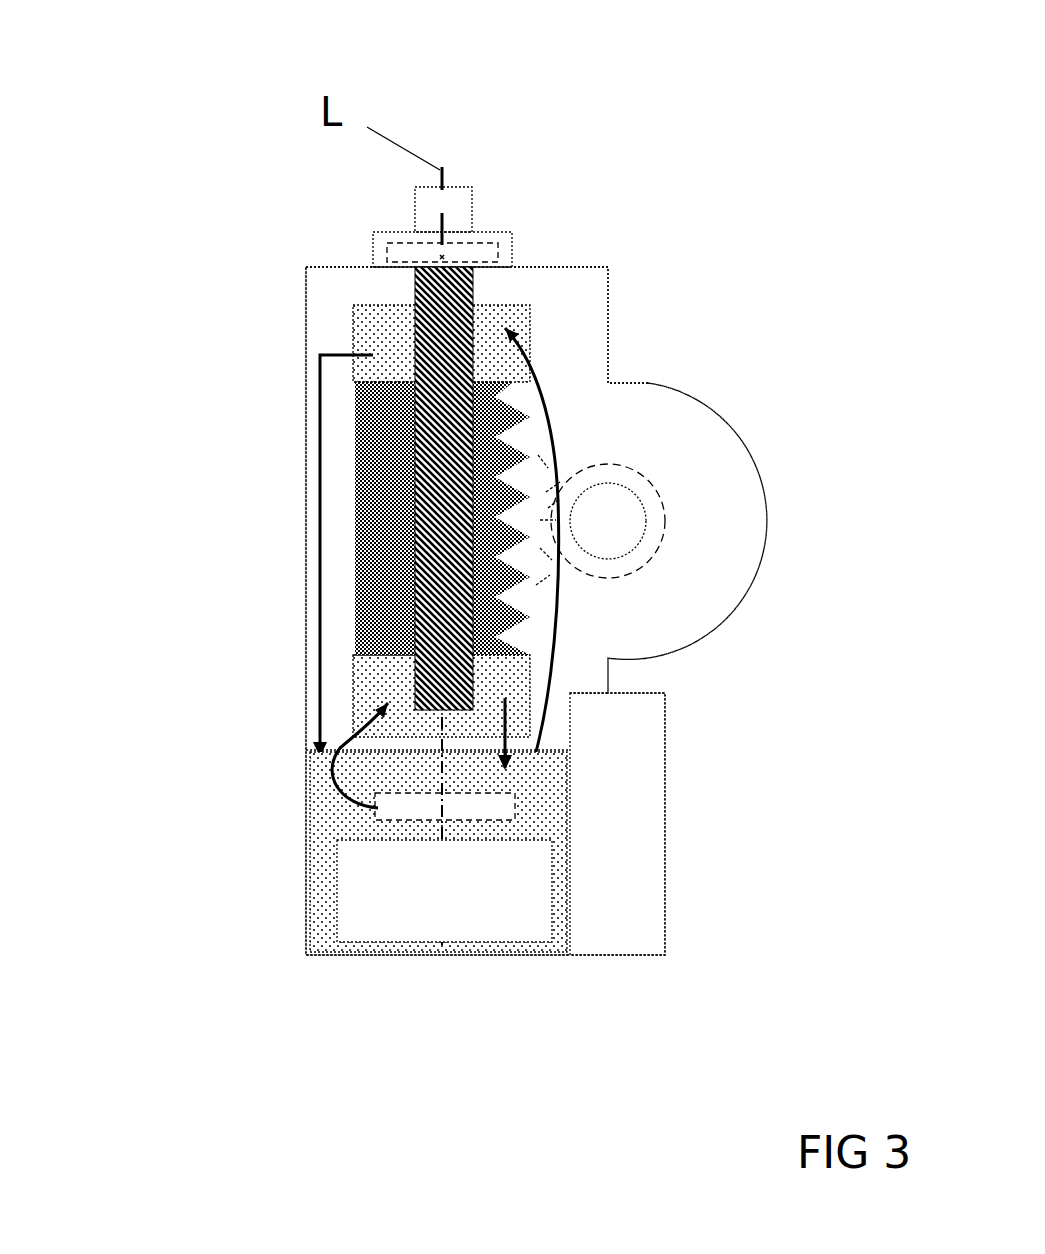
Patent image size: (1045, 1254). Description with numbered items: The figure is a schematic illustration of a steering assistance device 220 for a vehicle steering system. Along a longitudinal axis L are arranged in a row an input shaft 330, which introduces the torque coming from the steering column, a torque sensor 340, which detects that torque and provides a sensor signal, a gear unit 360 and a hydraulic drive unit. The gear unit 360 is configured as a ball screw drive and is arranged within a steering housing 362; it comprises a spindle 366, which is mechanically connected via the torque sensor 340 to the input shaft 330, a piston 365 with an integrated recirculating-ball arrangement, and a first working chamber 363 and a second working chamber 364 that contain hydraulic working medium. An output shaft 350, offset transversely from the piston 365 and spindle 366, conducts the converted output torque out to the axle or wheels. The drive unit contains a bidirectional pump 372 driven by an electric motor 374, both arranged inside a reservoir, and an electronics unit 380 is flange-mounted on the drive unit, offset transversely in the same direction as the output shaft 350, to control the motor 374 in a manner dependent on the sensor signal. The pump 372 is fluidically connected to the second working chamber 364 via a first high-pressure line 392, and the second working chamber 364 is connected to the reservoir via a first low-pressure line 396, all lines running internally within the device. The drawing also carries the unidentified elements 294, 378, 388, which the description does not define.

The steering assistance device 220 is at (134, 99).
The lever arm 294 is at (553, 430).
The input shaft 330 is at (472, 225).
The torque sensor 340 is at (512, 248).
The output shaft 350 is at (647, 520).
The gear unit 360 is at (340, 336).
The steering housing 362 is at (602, 615).
The first working chamber 363 is at (500, 325).
The second working chamber 364 is at (517, 685).
The piston 365 is at (390, 532).
The spindle 366 is at (417, 287).
The pump 372 is at (483, 803).
The motor 374 is at (390, 890).
The valve body 378 is at (262, 765).
The electronics unit 380 is at (610, 887).
The bypass passage 388 is at (318, 418).
The first high-pressure line 392 is at (333, 785).
The first low-pressure line 396 is at (563, 750).